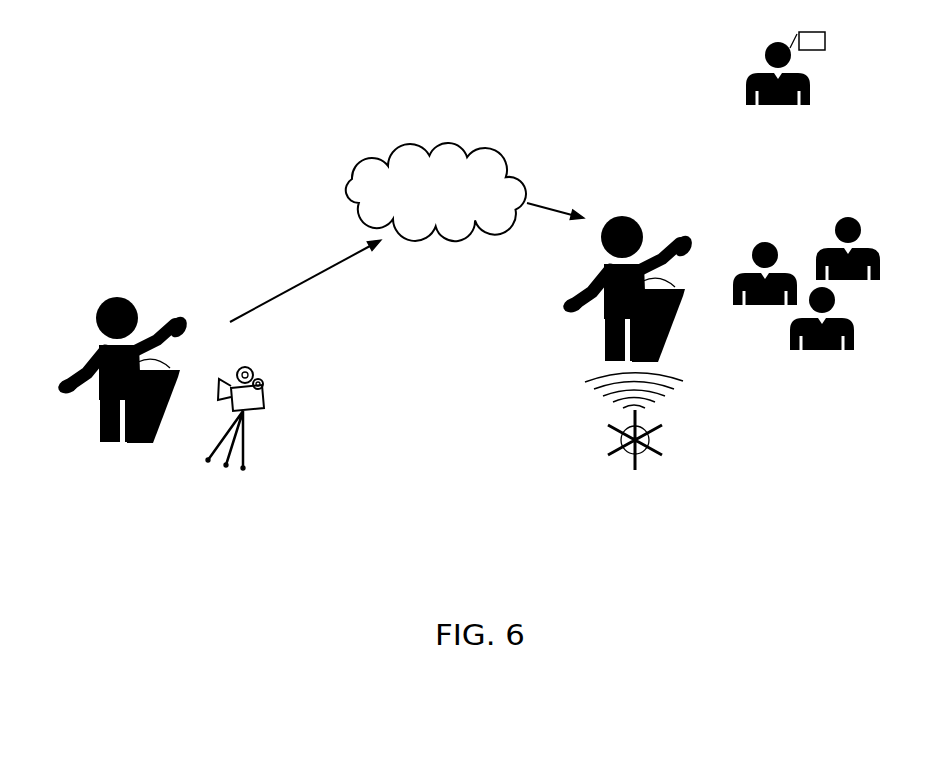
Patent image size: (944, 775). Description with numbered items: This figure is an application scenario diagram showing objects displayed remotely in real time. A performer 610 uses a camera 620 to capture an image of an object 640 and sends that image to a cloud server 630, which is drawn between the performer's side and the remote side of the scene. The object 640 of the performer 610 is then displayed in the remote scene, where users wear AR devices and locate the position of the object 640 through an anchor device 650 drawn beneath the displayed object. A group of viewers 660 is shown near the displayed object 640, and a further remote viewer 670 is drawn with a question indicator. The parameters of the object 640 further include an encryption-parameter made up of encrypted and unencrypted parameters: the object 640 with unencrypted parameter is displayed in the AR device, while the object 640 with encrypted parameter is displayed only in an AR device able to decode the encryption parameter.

The performer 610 is at (100, 432).
The camera 620 is at (250, 410).
The cloud server 630 is at (448, 235).
The object 640 is at (578, 314).
The anchor device 650 is at (620, 442).
The audience 660 is at (808, 350).
The remote viewer with question 670 is at (772, 105).